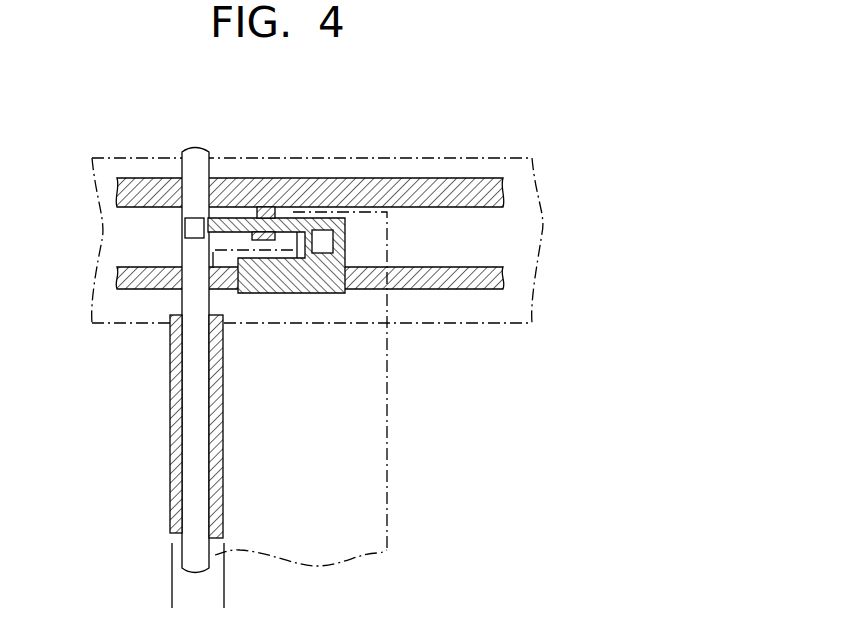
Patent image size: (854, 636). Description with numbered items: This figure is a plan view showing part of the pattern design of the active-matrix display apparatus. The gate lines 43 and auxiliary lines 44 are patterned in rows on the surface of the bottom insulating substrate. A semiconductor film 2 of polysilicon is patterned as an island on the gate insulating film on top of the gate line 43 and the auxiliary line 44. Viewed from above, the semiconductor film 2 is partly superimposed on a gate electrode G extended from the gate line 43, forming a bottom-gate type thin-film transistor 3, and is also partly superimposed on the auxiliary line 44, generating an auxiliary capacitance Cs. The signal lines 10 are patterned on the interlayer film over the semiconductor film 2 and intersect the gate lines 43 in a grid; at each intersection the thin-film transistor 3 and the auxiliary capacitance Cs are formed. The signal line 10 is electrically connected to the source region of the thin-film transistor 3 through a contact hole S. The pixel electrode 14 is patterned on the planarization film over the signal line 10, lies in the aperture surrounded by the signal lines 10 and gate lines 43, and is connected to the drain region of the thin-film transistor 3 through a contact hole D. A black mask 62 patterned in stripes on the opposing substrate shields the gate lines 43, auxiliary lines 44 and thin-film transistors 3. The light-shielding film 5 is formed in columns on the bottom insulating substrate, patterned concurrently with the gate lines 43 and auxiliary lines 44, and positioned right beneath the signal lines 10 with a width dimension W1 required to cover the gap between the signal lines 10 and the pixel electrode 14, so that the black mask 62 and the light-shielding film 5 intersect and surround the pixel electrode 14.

The signal line 10 is at (193, 152).
The gate electrode G is at (322, 258).
The thin-film transistor 3 is at (272, 202).
The black mask 62 is at (478, 168).
The gate line 43 is at (118, 197).
The auxiliary line 44 is at (117, 281).
The contact hole S is at (185, 230).
The contact hole D is at (323, 238).
The semiconductor film 2 is at (320, 293).
The auxiliary capacitance Cs is at (337, 335).
The light-shielding film 5 is at (170, 431).
The pixel electrode 14 is at (368, 486).
The width dimension W1 is at (255, 595).